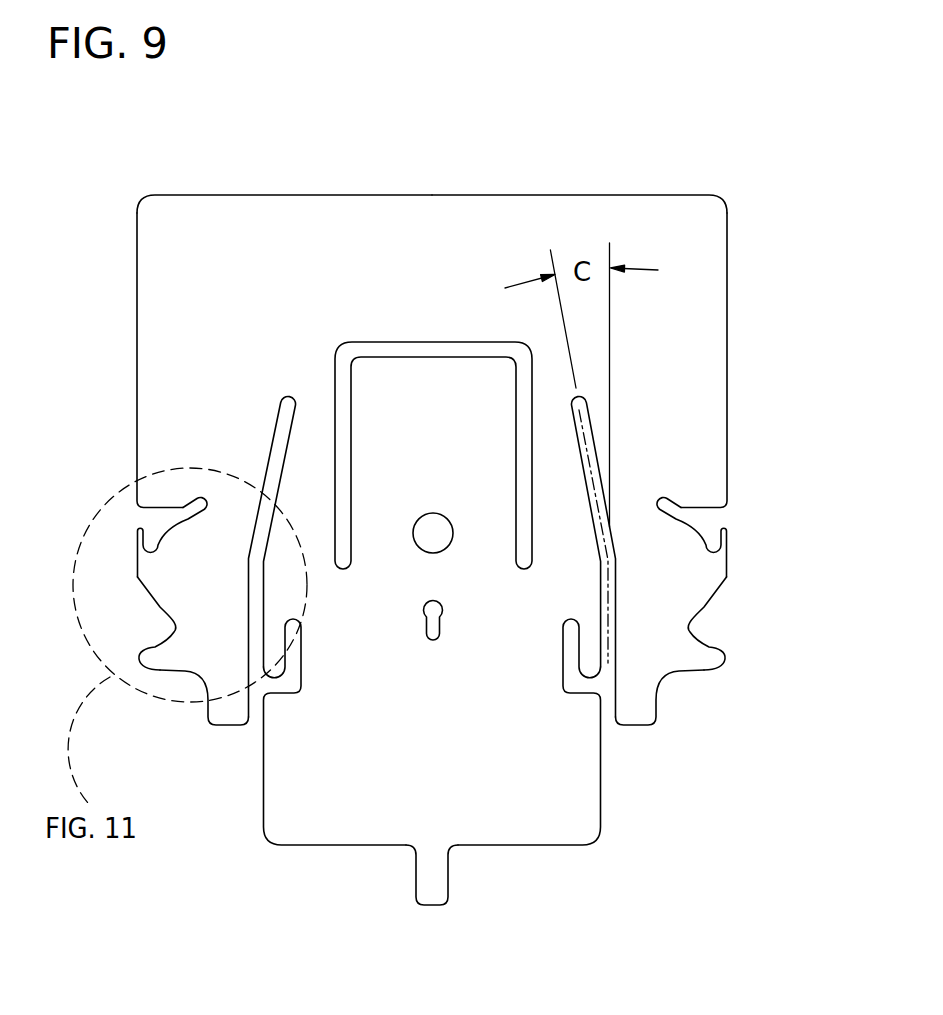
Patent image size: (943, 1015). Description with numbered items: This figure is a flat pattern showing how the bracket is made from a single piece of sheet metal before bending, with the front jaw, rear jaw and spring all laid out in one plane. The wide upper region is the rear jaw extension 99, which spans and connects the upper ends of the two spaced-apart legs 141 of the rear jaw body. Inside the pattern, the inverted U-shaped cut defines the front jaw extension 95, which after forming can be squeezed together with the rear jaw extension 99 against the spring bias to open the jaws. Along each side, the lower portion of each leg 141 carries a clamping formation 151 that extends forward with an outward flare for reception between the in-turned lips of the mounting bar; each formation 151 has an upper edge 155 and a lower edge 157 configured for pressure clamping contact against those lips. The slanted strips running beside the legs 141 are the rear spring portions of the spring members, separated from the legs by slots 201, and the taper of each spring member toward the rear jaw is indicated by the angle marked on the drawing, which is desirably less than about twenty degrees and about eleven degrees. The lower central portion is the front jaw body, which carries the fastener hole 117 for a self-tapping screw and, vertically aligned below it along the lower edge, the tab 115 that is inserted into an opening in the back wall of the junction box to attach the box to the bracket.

The rear jaw extension 99 is at (427, 212).
The front jaw extension 95 is at (406, 391).
The slots 201 is at (282, 413).
The legs 141 is at (168, 443).
The upper edges 155 is at (185, 512).
The clamping formation 151 is at (154, 652).
The lower edges 157 is at (157, 672).
The fastener hole 117 is at (423, 613).
The tab 115 is at (431, 893).